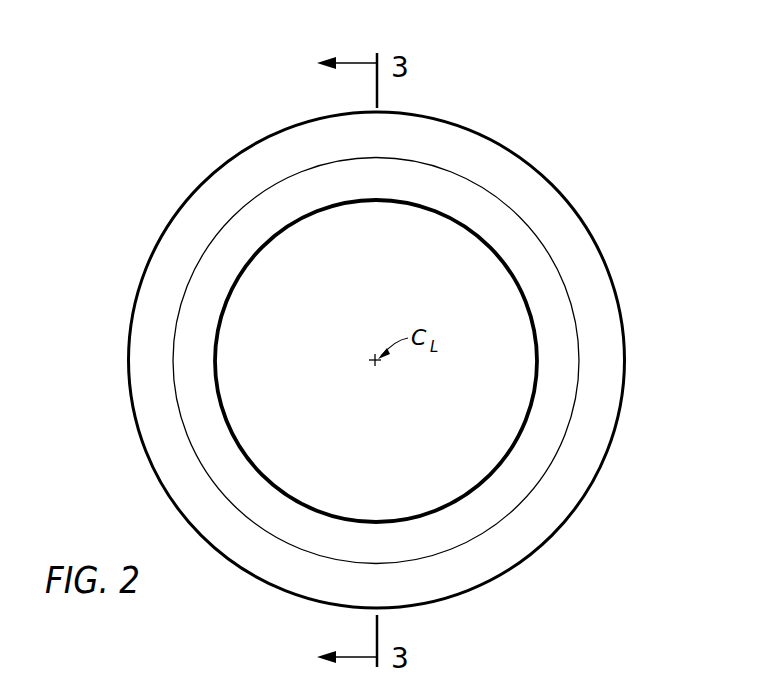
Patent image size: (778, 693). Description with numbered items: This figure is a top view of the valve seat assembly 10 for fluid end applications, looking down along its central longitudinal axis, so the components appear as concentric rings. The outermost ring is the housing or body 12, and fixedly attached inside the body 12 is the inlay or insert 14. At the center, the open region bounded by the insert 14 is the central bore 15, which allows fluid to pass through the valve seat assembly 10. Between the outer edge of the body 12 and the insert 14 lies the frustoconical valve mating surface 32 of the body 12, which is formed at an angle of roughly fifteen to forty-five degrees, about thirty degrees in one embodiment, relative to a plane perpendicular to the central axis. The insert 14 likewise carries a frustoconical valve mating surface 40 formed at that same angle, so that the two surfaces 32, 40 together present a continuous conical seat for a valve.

The valve seat assembly 10 is at (106, 139).
The body 12 is at (632, 326).
The insert 14 is at (558, 415).
The central bore 15 is at (488, 292).
The frustoconical valve mating surface 32 is at (527, 193).
The frustoconical valve mating surface 40 is at (457, 195).